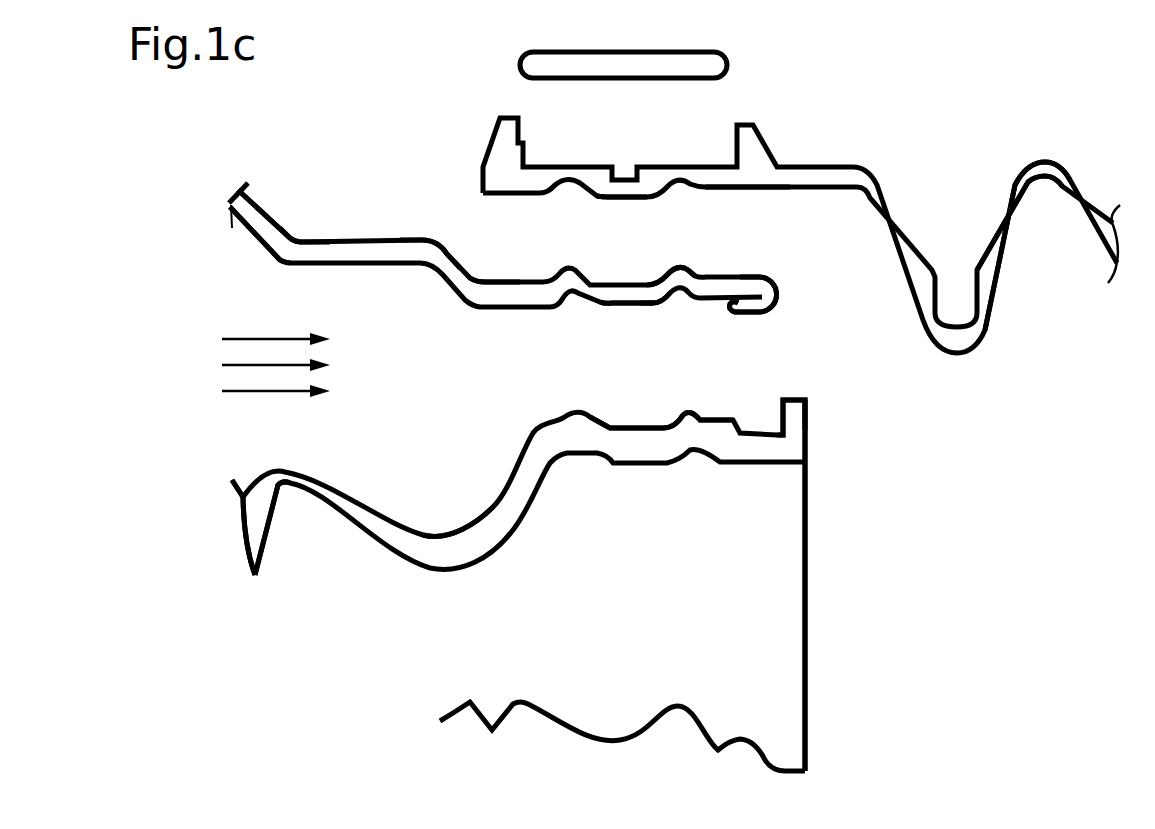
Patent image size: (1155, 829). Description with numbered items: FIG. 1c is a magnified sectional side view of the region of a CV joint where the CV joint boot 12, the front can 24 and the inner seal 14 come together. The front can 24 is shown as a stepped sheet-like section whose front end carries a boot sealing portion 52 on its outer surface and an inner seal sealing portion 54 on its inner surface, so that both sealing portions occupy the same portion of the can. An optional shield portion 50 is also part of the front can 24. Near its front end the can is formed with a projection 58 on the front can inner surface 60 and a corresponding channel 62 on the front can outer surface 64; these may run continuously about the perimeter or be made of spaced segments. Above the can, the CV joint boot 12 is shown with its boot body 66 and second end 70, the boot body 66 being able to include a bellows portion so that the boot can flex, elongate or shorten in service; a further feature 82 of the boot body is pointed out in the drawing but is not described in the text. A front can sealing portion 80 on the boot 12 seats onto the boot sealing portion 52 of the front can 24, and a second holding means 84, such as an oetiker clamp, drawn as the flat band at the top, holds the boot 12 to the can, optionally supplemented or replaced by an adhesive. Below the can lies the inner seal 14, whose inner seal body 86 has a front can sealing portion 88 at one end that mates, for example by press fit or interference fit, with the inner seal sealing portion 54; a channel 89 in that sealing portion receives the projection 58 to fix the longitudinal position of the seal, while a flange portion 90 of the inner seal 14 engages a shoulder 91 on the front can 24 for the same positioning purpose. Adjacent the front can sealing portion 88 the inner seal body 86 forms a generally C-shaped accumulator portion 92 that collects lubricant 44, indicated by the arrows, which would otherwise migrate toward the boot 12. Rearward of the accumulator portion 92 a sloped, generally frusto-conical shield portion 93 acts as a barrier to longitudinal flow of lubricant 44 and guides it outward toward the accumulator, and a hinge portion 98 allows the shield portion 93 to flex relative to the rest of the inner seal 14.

The CV joint boot 12 is at (1084, 133).
The inner seal 14 is at (825, 541).
The front can 24 is at (270, 213).
The lubricant 44 is at (246, 326).
The shield portion 50 is at (298, 238).
The boot sealing portion 52 is at (482, 282).
The inner seal sealing portion 54 is at (623, 305).
The projection 58 is at (653, 307).
The front can inner surface 60 is at (352, 268).
The channel 62 is at (625, 280).
The front can outer surface 64 is at (418, 237).
The boot body 66 is at (1004, 222).
The second end 70 is at (810, 167).
The front can sealing portion 80 is at (730, 190).
The bracket channel 82 is at (620, 199).
The second holding means 84 is at (603, 58).
The inner seal body 86 is at (453, 553).
The front can sealing portion 88 is at (655, 427).
The channel 89 is at (627, 418).
The flange portion 90 is at (793, 396).
The shoulder 91 is at (778, 295).
The accumulator portion 92 is at (453, 515).
The shield portion 93 is at (255, 482).
The hinge portion 98 is at (278, 483).